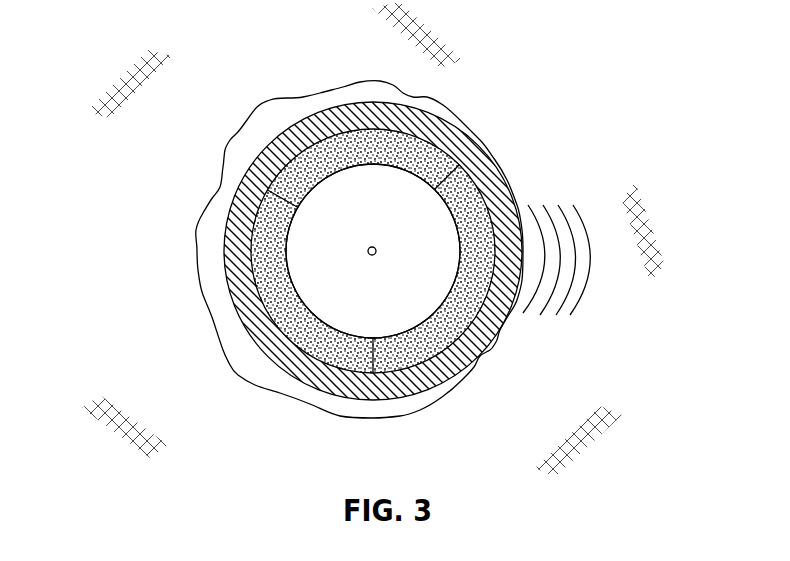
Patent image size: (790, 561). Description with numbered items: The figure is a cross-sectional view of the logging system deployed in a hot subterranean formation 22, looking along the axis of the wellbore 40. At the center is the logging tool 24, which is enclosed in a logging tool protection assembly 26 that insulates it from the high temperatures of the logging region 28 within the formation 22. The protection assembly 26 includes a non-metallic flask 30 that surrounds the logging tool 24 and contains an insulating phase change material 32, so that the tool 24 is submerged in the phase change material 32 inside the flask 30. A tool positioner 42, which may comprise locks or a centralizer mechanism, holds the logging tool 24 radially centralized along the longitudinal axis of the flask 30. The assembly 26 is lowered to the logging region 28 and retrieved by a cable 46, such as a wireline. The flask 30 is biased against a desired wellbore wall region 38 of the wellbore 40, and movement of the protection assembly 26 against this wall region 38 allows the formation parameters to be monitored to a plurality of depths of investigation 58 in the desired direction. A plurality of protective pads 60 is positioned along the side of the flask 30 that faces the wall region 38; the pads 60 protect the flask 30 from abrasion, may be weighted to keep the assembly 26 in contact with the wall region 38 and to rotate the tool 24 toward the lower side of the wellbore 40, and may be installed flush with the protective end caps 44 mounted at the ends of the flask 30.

The subterranean formation 22 is at (103, 238).
The logging tool 24 is at (383, 193).
The logging tool protection assembly 26 is at (235, 181).
The logging region 28 is at (642, 312).
The flask 30 is at (272, 140).
The phase change material 32 is at (310, 335).
The wellbore wall region 38 is at (488, 333).
The wellbore 40 is at (217, 200).
The tool positioner 42 is at (283, 205).
The protective end caps 44 is at (492, 203).
The cable 46 is at (368, 252).
The depths of investigation 58 is at (523, 313).
The protective pads 60 is at (443, 105).